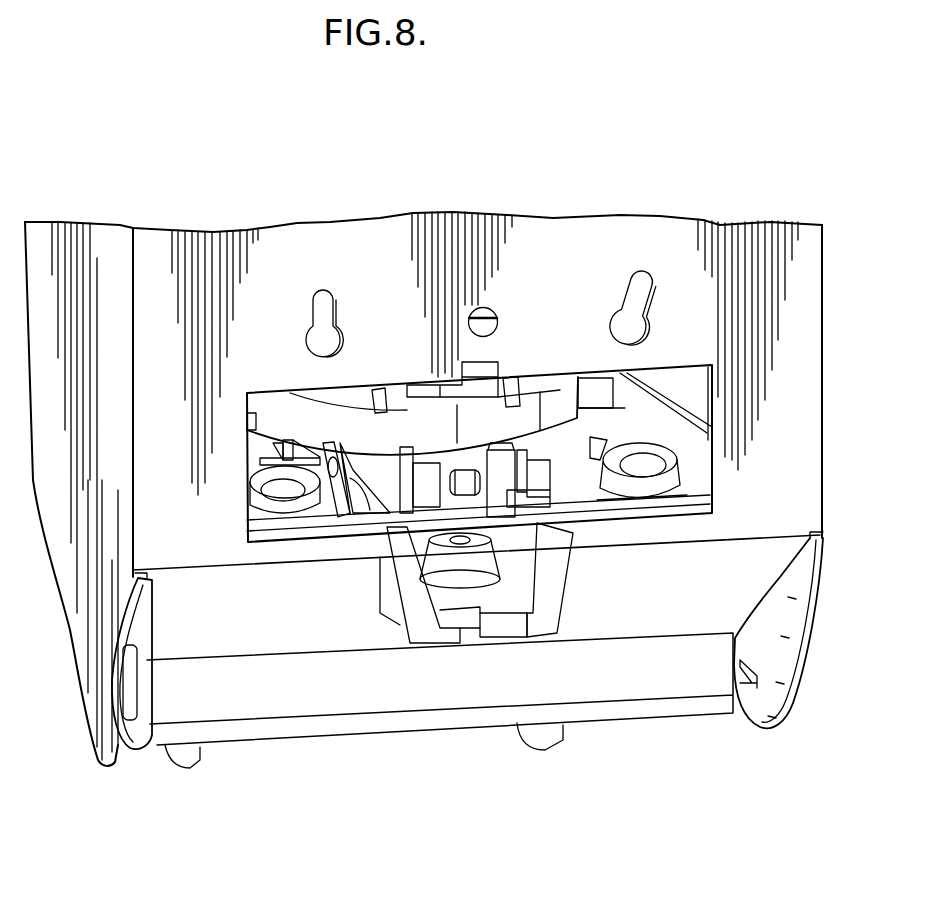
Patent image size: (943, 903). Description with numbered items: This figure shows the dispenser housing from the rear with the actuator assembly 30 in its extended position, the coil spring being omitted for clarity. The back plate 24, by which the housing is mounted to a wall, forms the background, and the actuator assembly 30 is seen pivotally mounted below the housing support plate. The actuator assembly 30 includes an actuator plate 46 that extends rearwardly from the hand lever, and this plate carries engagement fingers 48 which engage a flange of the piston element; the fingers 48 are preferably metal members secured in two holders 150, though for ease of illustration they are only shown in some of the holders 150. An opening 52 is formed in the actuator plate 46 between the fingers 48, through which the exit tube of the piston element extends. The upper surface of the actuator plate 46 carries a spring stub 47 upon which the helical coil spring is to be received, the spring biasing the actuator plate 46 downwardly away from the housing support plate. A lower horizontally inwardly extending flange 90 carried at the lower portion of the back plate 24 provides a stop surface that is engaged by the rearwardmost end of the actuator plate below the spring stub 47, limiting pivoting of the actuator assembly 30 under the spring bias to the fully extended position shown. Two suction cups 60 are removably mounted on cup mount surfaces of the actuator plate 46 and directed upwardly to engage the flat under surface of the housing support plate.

The back plate 24 is at (806, 344).
The actuator assembly 30 is at (570, 490).
The actuator plate 46 is at (557, 460).
The spring stub 47 is at (447, 578).
The engagement fingers 48 is at (328, 503).
The opening 52 is at (386, 466).
The suction cups 60 is at (268, 504).
The flange 90 is at (520, 638).
The holders 150 is at (550, 470).